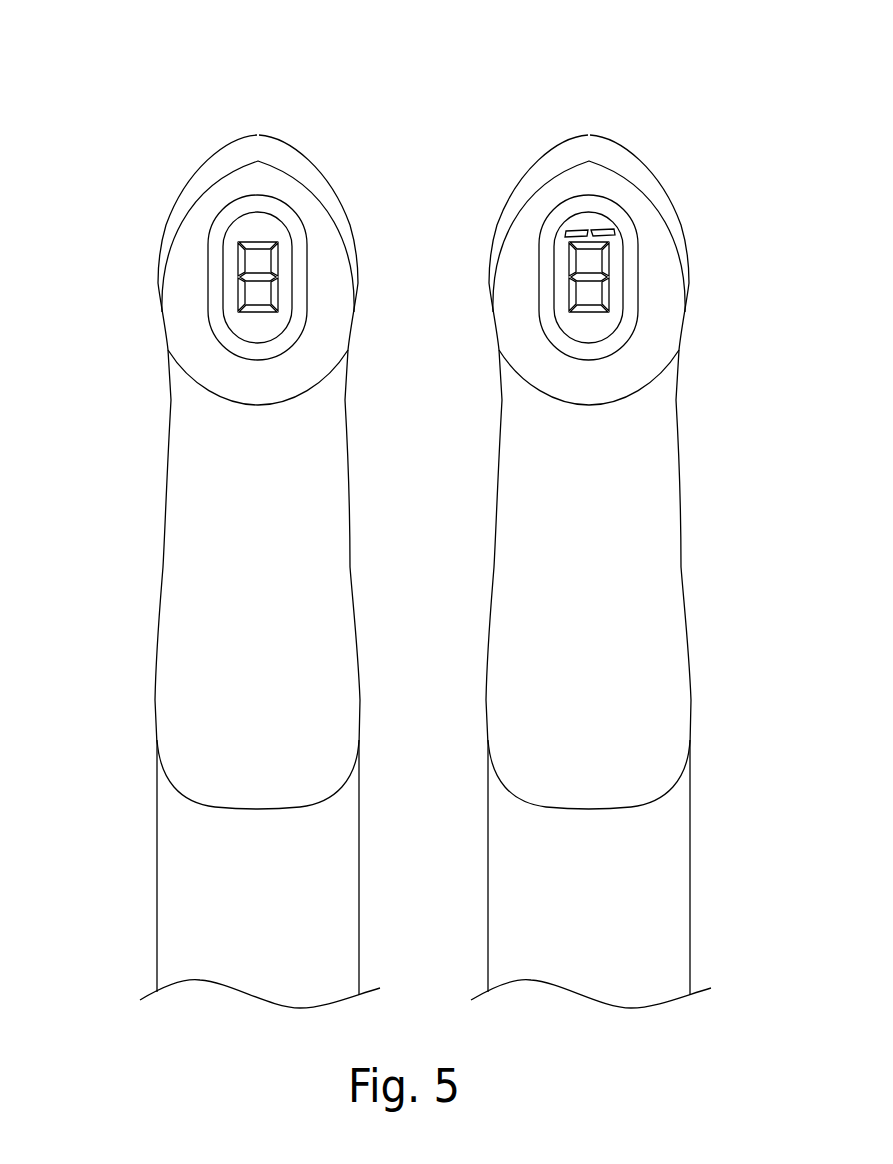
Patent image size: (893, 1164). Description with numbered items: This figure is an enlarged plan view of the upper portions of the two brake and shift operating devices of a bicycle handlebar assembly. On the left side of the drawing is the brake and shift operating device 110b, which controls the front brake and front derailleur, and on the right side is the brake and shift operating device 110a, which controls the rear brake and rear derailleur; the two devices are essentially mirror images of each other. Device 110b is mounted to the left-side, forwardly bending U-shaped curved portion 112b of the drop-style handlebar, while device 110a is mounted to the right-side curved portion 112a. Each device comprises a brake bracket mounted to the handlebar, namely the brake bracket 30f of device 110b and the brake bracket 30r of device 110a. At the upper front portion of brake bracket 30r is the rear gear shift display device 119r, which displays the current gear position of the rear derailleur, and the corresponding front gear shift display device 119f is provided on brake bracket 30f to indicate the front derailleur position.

The brake and shift operating device 110a is at (618, 128).
The brake and shift operating device 110b is at (228, 130).
The front gear shift display device 119f is at (322, 188).
The rear gear shift display device 119r is at (654, 188).
The brake bracket 30f is at (653, 464).
The brake bracket 30r is at (328, 467).
The curved portion 112a is at (668, 822).
The curved portion 112b is at (345, 833).